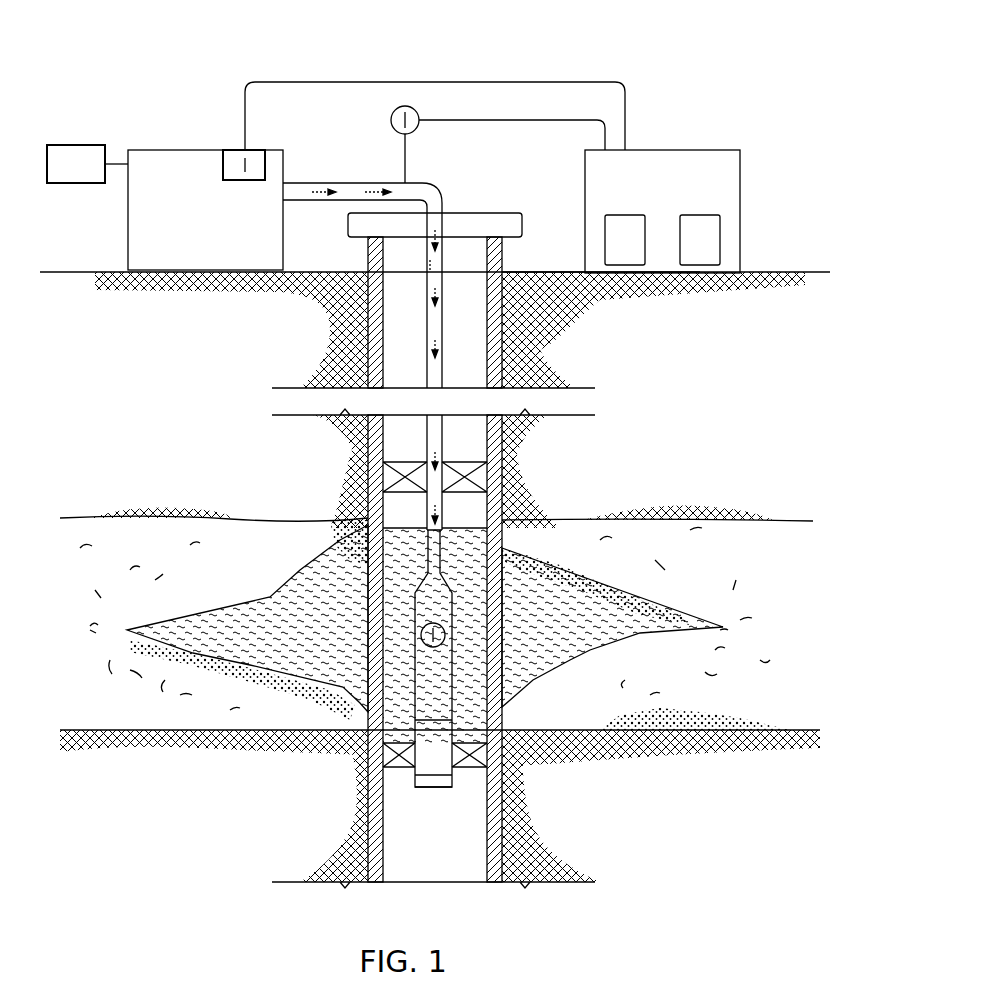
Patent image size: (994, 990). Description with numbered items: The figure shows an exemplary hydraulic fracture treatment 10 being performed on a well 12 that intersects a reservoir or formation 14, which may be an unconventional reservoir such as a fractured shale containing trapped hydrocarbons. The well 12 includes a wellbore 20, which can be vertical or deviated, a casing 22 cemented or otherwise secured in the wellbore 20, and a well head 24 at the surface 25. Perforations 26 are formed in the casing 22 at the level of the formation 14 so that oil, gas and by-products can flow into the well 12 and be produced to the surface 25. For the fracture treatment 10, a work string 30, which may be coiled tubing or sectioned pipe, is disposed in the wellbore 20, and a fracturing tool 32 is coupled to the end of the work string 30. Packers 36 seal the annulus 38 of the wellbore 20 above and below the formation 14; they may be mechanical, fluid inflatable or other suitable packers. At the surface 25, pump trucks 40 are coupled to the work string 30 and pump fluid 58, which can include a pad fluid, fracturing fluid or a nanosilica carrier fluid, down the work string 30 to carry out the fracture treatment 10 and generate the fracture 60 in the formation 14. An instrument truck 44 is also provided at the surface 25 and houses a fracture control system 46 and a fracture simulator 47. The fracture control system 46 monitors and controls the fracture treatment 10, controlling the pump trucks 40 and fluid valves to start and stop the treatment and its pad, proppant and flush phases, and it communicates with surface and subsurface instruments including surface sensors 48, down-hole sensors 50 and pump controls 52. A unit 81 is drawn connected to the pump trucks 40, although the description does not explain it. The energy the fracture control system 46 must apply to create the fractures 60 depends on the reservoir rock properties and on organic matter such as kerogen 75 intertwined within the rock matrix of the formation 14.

The fracture treatment 10 is at (636, 67).
The well 12 is at (466, 185).
The formation 14 is at (736, 578).
The wellbore 20 is at (487, 300).
The casing 22 is at (387, 335).
The well head 24 is at (505, 212).
The surface 25 is at (541, 270).
The perforations 26 is at (363, 590).
The work string 30 is at (443, 437).
The fracturing tool 32 is at (428, 796).
The packers 36 is at (502, 492).
The annulus 38 is at (473, 358).
The pump trucks 40 is at (167, 148).
The instrument truck 44 is at (701, 148).
The fracture control system 46 is at (635, 250).
The fracture simulator 47 is at (710, 250).
The surface sensors 48 is at (391, 123).
The down-hole sensors 50 is at (437, 650).
The pump controls 52 is at (222, 163).
The fluid 58 is at (331, 182).
The fracture 60 is at (222, 607).
The kerogen 75 is at (104, 631).
The fluid source 81 is at (87, 164).